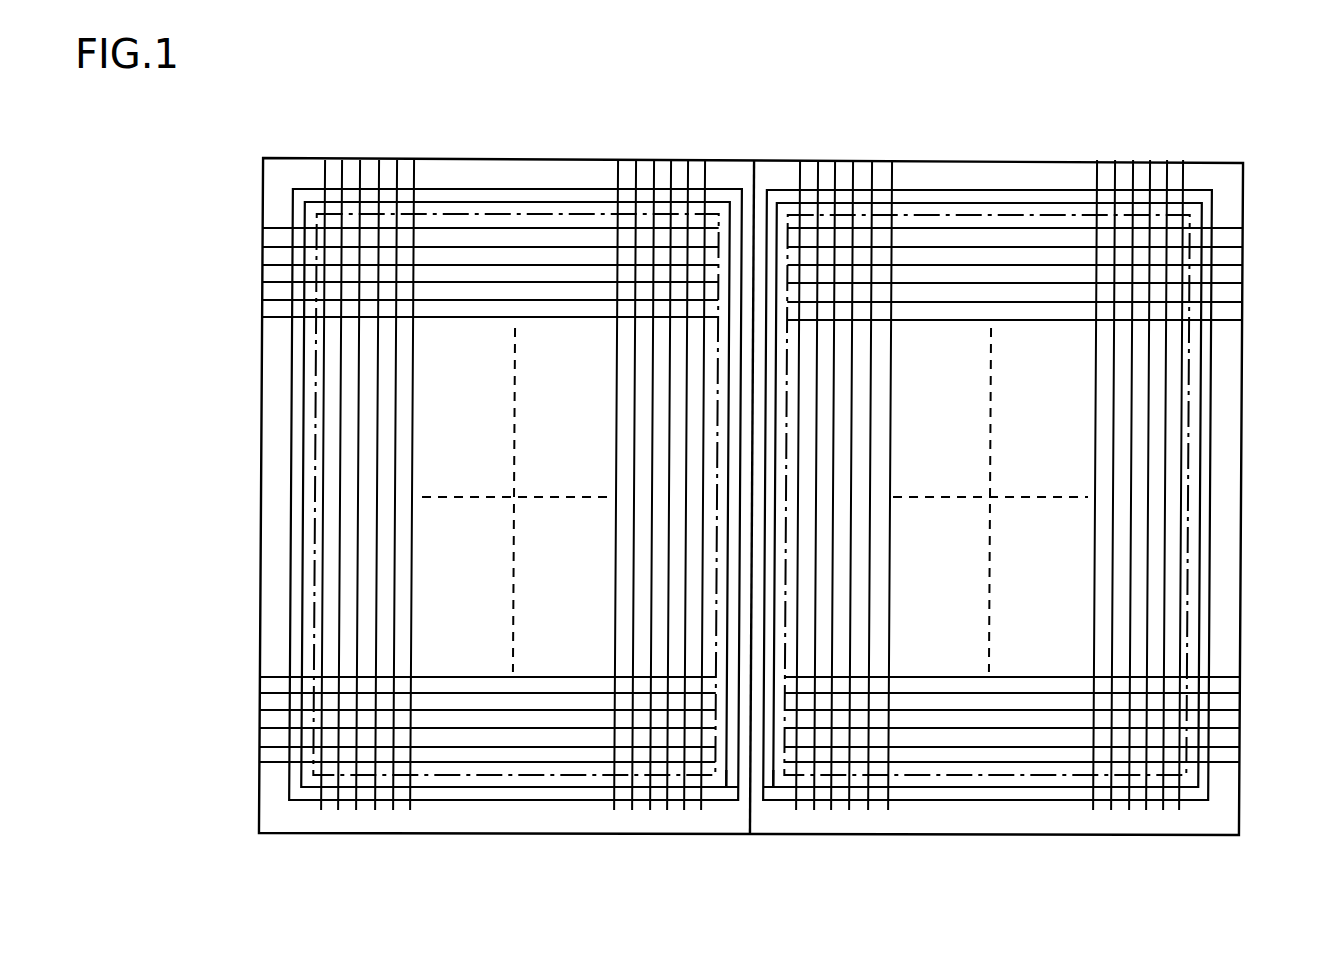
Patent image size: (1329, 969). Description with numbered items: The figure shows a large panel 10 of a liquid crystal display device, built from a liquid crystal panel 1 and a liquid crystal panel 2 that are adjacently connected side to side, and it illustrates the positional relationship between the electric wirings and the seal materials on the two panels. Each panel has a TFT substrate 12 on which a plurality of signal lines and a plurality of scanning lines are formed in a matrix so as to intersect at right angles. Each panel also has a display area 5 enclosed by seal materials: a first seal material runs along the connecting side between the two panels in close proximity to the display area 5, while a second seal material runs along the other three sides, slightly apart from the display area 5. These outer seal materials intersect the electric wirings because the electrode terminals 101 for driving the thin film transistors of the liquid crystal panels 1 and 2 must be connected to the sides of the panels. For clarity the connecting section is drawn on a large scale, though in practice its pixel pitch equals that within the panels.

The liquid crystal panel 1 is at (230, 197).
The liquid crystal panel 2 is at (1257, 207).
The large panel 10 is at (843, 104).
The TFT substrate 12 is at (262, 172).
The electrode terminals 101 is at (327, 174).
The display area 5 is at (569, 213).